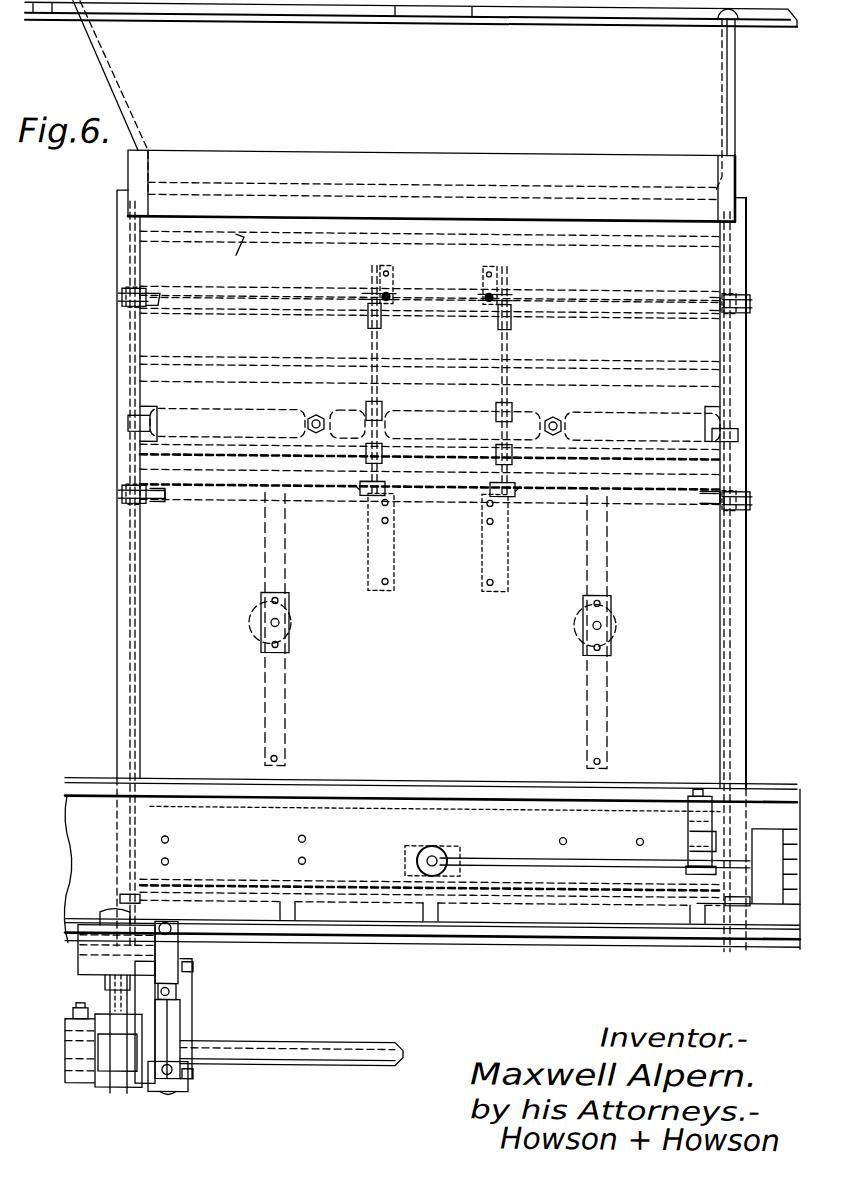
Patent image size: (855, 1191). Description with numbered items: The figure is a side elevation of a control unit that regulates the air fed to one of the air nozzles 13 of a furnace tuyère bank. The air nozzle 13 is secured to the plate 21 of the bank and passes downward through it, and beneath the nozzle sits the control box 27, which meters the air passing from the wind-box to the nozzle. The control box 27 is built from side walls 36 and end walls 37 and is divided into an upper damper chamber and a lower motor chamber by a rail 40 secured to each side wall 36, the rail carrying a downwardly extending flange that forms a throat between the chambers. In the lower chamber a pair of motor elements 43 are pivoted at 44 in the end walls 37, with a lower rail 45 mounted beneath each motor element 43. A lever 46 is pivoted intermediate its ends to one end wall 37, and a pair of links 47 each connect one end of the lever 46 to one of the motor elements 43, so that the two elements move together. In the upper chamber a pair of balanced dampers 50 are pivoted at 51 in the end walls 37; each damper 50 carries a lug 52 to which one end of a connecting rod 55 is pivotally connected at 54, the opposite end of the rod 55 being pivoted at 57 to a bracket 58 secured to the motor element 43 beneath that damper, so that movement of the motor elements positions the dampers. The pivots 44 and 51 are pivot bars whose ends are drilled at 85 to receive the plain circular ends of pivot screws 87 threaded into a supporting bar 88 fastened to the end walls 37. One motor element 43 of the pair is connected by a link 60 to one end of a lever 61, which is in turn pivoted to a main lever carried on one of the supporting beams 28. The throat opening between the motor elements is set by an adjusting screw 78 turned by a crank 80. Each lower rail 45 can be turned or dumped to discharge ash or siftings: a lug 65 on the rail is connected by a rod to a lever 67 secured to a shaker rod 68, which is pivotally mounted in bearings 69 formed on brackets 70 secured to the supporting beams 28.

The air nozzle 13 is at (404, 111).
The plate 21 is at (288, 20).
The control box 27 is at (117, 344).
The supporting beam 28 is at (402, 779).
The side wall 36 is at (436, 630).
The end wall 37 is at (130, 572).
The rail 40 is at (228, 378).
The motor element 43 is at (138, 594).
The pivot 44 is at (140, 498).
The lower rail 45 is at (322, 875).
The lever 46 is at (688, 809).
The link 47 is at (698, 783).
The balanced damper 50 is at (250, 253).
The pivot 51 is at (150, 296).
The lug 52 is at (380, 266).
The pivot connection 54 is at (386, 293).
The connecting rod 55 is at (378, 343).
The pivot connection 57 is at (385, 488).
The bracket 58 is at (368, 538).
The link 60 is at (432, 857).
The lever 61 is at (585, 866).
The lug 65 is at (178, 948).
The lever 67 is at (184, 1090).
The shaker rod 68 is at (270, 1062).
The bearing 69 is at (118, 1092).
The bracket 70 is at (105, 986).
The adjusting screw 78 is at (278, 620).
The crank 80 is at (291, 628).
The drilled hole 85 is at (158, 302).
The pivot screw 87 is at (118, 296).
The supporting bar 88 is at (130, 289).